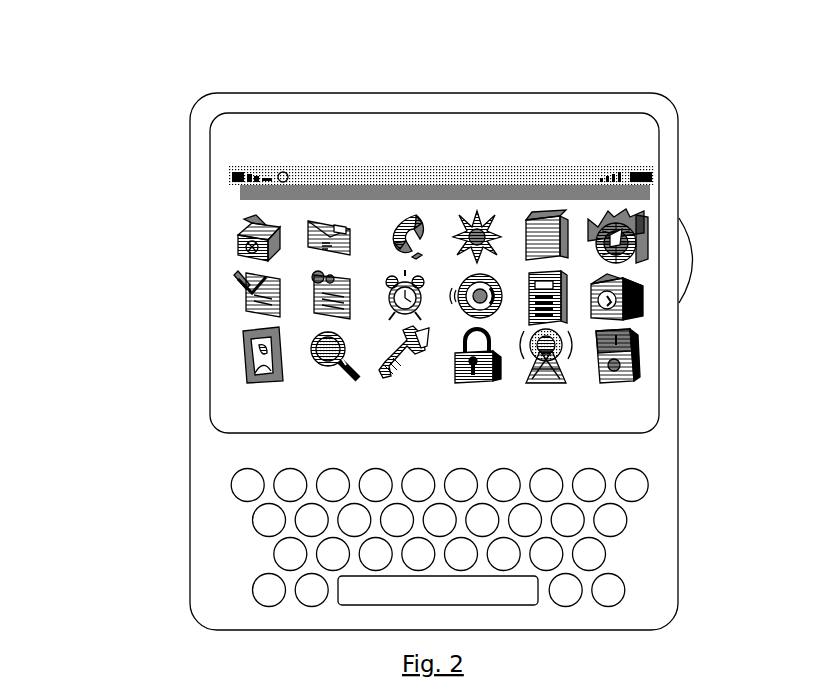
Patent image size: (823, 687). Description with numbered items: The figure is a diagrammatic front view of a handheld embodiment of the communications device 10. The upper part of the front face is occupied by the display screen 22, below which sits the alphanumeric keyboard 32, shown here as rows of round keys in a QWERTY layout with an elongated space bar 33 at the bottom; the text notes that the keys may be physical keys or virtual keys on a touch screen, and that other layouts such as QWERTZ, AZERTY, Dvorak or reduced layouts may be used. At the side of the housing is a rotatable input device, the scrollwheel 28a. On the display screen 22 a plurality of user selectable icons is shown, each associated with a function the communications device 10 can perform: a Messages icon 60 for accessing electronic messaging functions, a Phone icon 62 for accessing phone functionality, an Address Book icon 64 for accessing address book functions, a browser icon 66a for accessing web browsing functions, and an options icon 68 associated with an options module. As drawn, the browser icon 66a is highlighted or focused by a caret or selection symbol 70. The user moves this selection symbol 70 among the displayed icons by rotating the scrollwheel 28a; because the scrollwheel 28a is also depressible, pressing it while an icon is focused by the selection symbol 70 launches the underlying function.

The communications device 10 is at (178, 82).
The display screen 22 is at (228, 397).
The scrollwheel 28a is at (694, 272).
The keyboard 32 is at (509, 564).
The space bar 33 is at (365, 606).
The Messages icon 60 is at (323, 213).
The Phone icon 62 is at (412, 220).
The Address Book icon 64 is at (478, 212).
The browser icon 66a is at (630, 212).
The options icon 68 is at (388, 370).
The selection symbol 70 is at (647, 218).